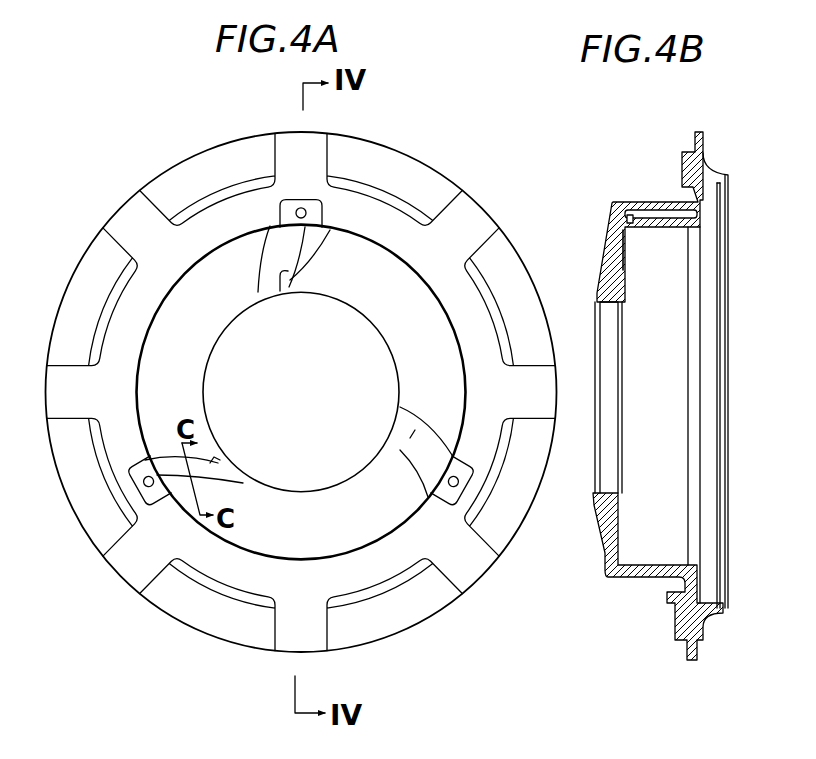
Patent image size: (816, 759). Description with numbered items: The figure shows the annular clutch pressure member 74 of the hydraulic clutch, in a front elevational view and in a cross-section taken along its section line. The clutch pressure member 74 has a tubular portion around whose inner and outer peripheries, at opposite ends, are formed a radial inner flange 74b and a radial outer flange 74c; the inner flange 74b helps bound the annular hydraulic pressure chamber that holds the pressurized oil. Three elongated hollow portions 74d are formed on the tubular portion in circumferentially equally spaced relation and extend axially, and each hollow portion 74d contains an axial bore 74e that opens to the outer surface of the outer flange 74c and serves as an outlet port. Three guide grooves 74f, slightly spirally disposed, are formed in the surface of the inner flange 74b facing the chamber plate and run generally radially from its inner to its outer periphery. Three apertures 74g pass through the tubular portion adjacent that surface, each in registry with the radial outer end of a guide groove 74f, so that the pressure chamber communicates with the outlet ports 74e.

In FIG. 4A, the clutch pressure member 74 is at (443, 175).
In FIG. 4A, the inner radial flange 74b is at (276, 547).
In FIG. 4B, the inner radial flange 74b is at (609, 230).
In FIG. 4A, the outer radial flange 74c is at (409, 622).
In FIG. 4B, the outer radial flange 74c is at (704, 146).
In FIG. 4A, the hollow portion 74d is at (323, 215).
In FIG. 4B, the hollow portion 74d is at (650, 201).
In FIG. 4A, the axial bore 74e is at (302, 207).
In FIG. 4B, the axial bore 74e is at (699, 215).
In FIG. 4A, the guide groove 74f is at (283, 292).
In FIG. 4B, the guide groove 74f is at (624, 251).
In FIG. 4B, the aperture 74g is at (632, 223).